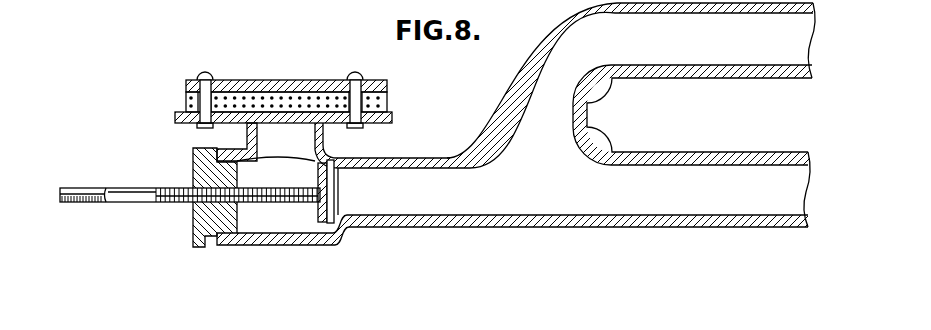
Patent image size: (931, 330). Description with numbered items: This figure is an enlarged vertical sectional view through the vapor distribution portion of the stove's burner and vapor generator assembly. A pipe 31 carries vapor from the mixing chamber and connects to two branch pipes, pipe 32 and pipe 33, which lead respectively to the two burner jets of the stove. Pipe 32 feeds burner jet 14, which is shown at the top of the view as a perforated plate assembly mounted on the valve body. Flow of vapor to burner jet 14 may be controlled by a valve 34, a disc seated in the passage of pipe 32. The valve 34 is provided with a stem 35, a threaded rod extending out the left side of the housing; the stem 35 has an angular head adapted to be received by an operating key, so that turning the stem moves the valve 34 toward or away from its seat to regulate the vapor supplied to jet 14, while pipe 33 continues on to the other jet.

The burner jet 14 is at (187, 103).
The pipe 31 is at (709, 58).
The pipe 32 is at (372, 218).
The pipe 33 is at (720, 217).
The valve 34 is at (318, 220).
The stem 35 is at (143, 203).